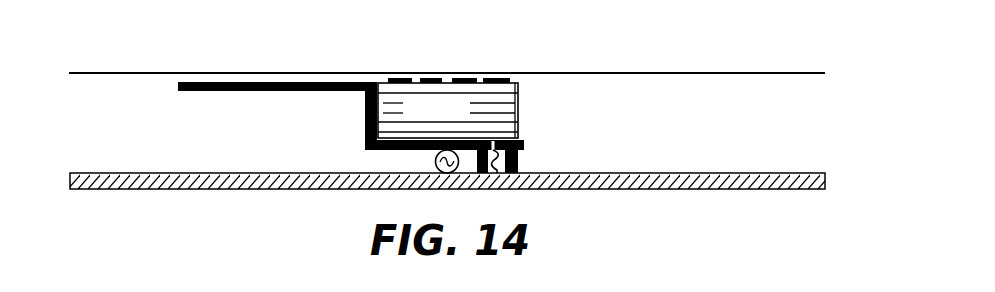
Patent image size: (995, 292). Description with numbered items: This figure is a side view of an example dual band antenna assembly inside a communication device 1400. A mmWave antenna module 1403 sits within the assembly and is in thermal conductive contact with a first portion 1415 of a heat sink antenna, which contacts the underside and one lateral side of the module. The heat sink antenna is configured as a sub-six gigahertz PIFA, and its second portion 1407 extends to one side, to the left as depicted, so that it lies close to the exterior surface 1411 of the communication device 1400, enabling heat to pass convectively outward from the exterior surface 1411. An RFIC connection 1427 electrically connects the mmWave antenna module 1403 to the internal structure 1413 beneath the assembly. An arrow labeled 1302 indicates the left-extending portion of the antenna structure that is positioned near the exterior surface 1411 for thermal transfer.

The communication device 1400 is at (255, 50).
The exterior surface 1411 is at (575, 72).
The antenna element 1302 is at (176, 91).
The second portion 1407 is at (304, 92).
The mmWave antenna module 1403 is at (457, 114).
The first portion 1415 is at (403, 144).
The RFIC connection 1427 is at (500, 160).
The internal structure 1413 is at (592, 189).